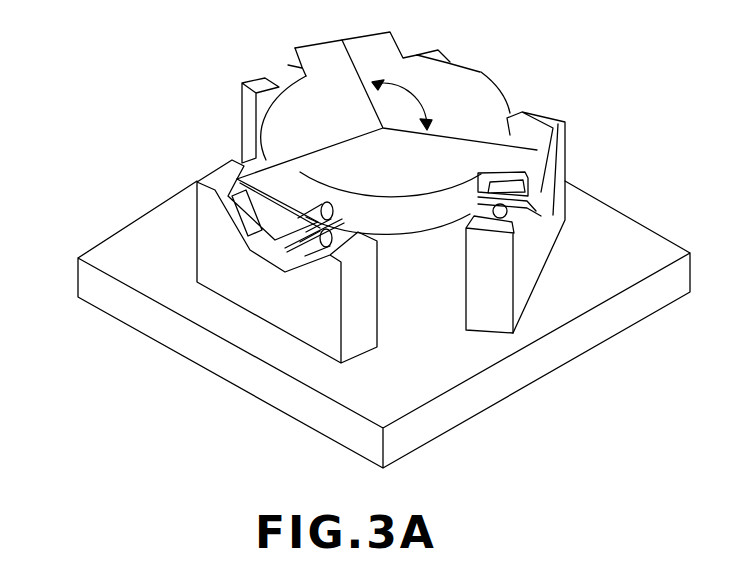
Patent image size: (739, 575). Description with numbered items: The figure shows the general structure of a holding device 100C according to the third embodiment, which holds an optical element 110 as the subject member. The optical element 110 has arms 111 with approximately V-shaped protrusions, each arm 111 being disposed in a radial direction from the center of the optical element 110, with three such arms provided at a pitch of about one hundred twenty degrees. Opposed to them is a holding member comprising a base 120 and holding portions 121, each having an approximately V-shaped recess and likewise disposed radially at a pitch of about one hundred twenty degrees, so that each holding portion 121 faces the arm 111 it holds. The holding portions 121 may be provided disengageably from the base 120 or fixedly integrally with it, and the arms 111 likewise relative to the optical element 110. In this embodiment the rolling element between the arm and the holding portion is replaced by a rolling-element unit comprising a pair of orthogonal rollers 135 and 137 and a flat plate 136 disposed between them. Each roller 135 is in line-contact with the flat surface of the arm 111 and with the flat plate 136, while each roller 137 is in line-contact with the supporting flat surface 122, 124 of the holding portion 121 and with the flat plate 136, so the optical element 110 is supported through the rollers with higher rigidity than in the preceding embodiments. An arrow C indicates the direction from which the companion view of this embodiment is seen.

The holding device 100C is at (219, 76).
The optical element 110 is at (306, 105).
The arm 111 is at (527, 127).
The base 120 is at (493, 393).
The holding portion 121 is at (263, 304).
The supporting flat surface 122 is at (248, 208).
The supporting flat surface 124 is at (307, 262).
The roller 135 is at (520, 188).
The flat plate 136 is at (535, 209).
The roller 137 is at (508, 218).
The arrow C is at (131, 172).